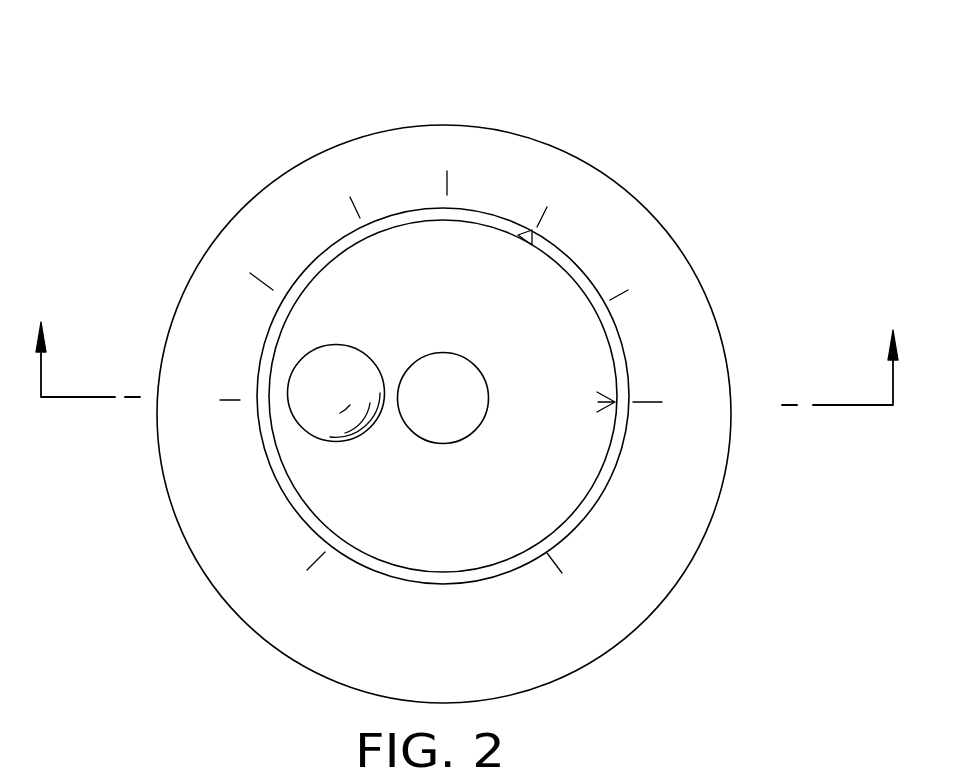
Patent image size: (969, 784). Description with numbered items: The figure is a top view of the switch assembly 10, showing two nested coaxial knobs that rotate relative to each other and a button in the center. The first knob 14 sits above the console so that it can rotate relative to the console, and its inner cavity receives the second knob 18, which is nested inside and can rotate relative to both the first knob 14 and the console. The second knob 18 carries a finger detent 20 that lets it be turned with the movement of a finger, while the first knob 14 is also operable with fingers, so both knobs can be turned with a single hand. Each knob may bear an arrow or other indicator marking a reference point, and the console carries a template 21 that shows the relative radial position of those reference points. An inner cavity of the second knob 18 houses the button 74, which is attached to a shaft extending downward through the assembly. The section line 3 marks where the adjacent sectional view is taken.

The section line indicator for FIG. 3 is at (467, 349).
The switch assembly 10 is at (497, 185).
The first knob 14 is at (588, 495).
The second knob 18 is at (429, 540).
The finger detent 20 is at (332, 368).
The template 21 is at (636, 224).
The button 74 is at (460, 397).